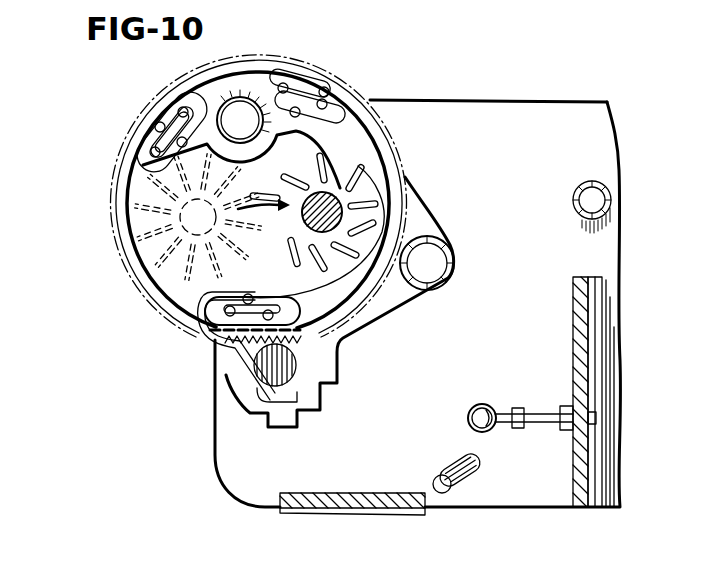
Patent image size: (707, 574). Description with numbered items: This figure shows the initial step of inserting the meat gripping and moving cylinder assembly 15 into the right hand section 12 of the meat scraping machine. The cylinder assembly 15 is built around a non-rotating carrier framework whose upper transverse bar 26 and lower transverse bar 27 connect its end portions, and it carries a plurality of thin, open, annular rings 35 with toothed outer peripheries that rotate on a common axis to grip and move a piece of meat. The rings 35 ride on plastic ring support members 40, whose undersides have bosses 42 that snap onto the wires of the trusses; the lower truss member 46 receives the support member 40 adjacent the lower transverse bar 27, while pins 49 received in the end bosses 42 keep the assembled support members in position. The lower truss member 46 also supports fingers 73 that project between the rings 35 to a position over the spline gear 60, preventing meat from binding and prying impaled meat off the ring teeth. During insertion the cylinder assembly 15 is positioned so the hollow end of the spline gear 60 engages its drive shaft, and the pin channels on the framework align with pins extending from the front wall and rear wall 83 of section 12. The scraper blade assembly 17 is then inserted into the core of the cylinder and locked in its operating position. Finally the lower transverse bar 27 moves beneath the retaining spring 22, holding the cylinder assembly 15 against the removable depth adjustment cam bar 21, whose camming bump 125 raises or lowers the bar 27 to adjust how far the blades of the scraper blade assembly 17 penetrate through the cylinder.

The right hand section 12 is at (621, 125).
The meat gripping and moving cylinder assembly 15 is at (106, 228).
The scraper blade assembly 17 is at (222, 278).
The depth adjustment cam bar 21 is at (437, 480).
The retaining spring 22 is at (480, 404).
The upper transverse bar 26 is at (233, 96).
The lower transverse bar 27 is at (457, 259).
The rings 35 is at (300, 343).
The ring support members 40 is at (143, 143).
The bosses 42 is at (187, 100).
The lower truss member 46 is at (266, 305).
The pins 49 is at (155, 126).
The spline gear 60 is at (265, 385).
The fingers 73 is at (228, 362).
The rear wall 83 is at (494, 114).
The camming bump 125 is at (470, 464).